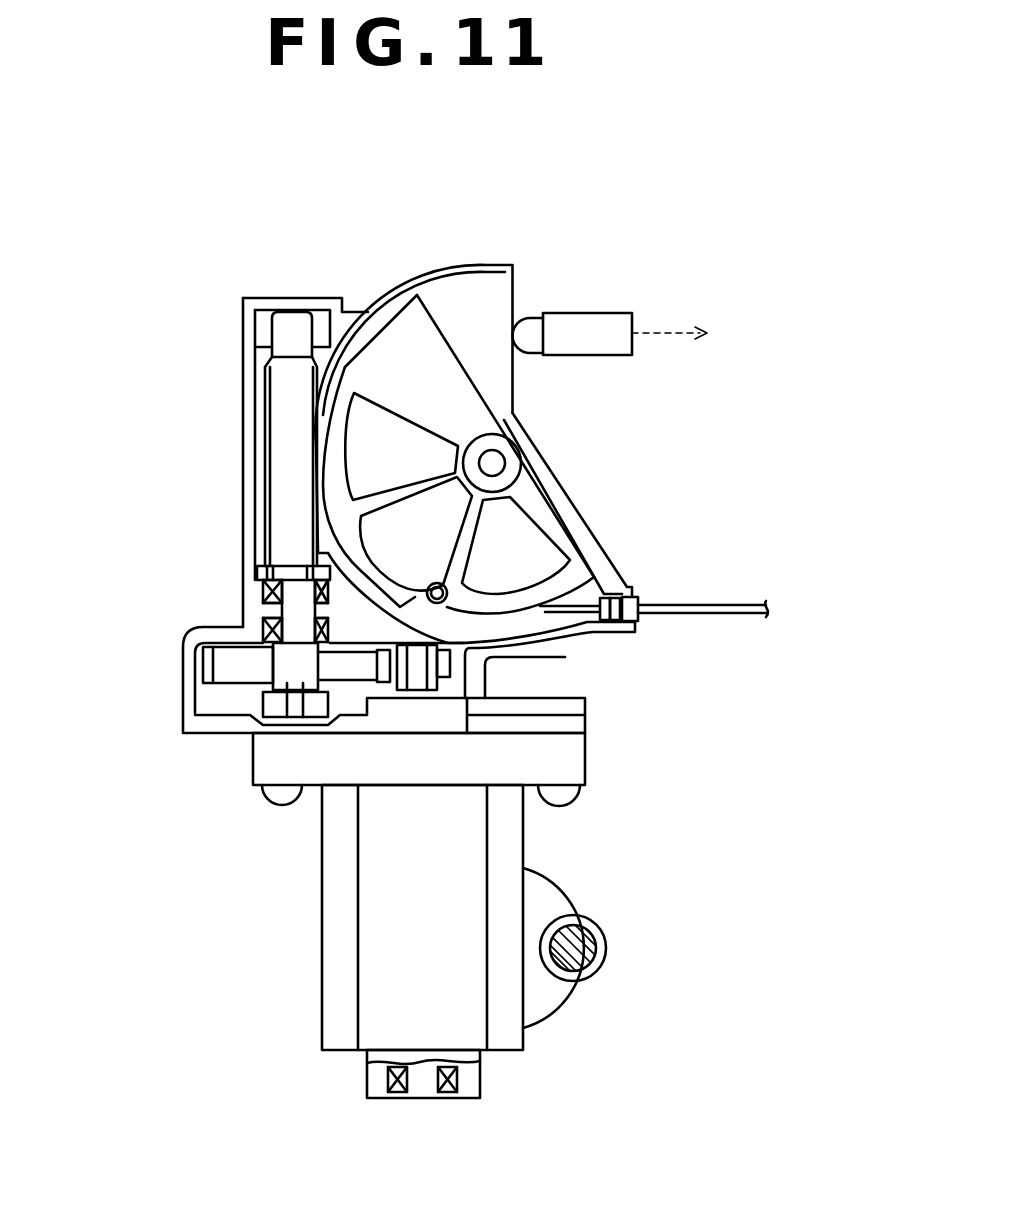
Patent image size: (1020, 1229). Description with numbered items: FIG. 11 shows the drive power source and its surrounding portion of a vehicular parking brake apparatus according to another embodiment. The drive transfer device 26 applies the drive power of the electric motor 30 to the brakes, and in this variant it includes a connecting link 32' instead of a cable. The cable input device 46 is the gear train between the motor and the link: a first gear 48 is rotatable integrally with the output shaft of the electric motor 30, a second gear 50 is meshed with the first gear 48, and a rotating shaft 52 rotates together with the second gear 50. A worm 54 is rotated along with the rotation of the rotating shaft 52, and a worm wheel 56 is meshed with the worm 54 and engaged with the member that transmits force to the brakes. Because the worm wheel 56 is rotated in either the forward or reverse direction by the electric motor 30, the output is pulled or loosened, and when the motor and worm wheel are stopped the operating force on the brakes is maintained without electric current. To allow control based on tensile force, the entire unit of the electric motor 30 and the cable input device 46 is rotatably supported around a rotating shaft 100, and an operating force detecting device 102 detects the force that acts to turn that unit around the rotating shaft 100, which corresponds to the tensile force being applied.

The drive transfer device 26 is at (717, 640).
The electric motor 30 is at (320, 912).
The connecting link 32' is at (691, 574).
The cable input device 46 is at (158, 603).
The first gear 48 is at (440, 667).
The second gear 50 is at (232, 670).
The rotating shaft 52 is at (280, 610).
The worm 54 is at (268, 428).
The worm wheel 56 is at (389, 397).
The rotating shaft 100 is at (587, 940).
The operating force detecting device 102 is at (593, 328).